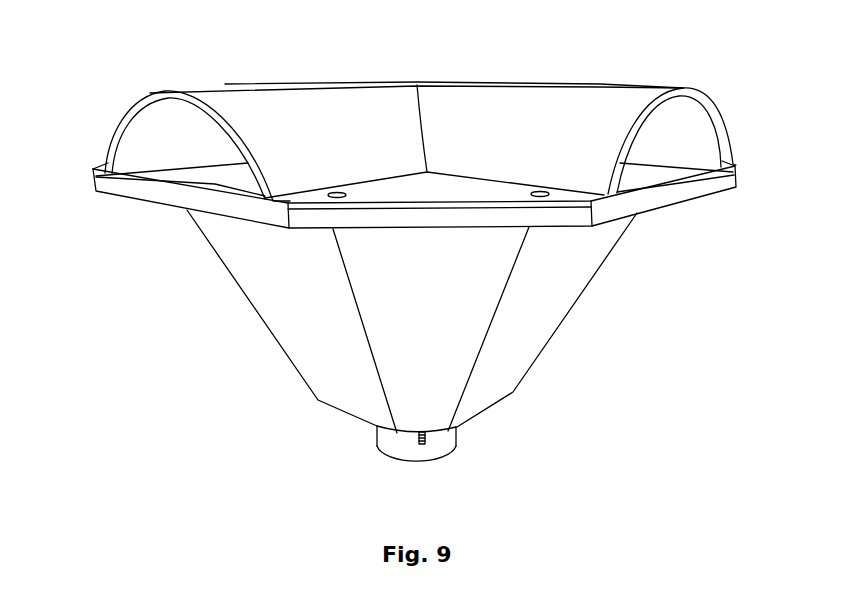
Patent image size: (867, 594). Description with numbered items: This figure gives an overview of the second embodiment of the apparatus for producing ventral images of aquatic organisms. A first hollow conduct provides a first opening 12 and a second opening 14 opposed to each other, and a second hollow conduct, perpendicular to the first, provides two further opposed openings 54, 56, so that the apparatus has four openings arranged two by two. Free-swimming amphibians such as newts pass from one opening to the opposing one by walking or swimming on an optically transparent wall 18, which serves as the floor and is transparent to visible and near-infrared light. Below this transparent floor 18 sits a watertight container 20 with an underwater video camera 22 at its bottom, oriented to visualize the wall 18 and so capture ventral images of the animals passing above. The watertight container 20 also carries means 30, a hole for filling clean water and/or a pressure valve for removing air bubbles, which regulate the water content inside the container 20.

The first opening 12 is at (195, 153).
The second opening 14 is at (585, 84).
The optically transparent wall 18 is at (236, 172).
The watertight container 20 is at (543, 313).
The underwater video camera 22 is at (447, 445).
The means for regulating water content 30 is at (416, 437).
The opening of second hollow conduct 54 is at (225, 84).
The opening of second hollow conduct 56 is at (674, 142).